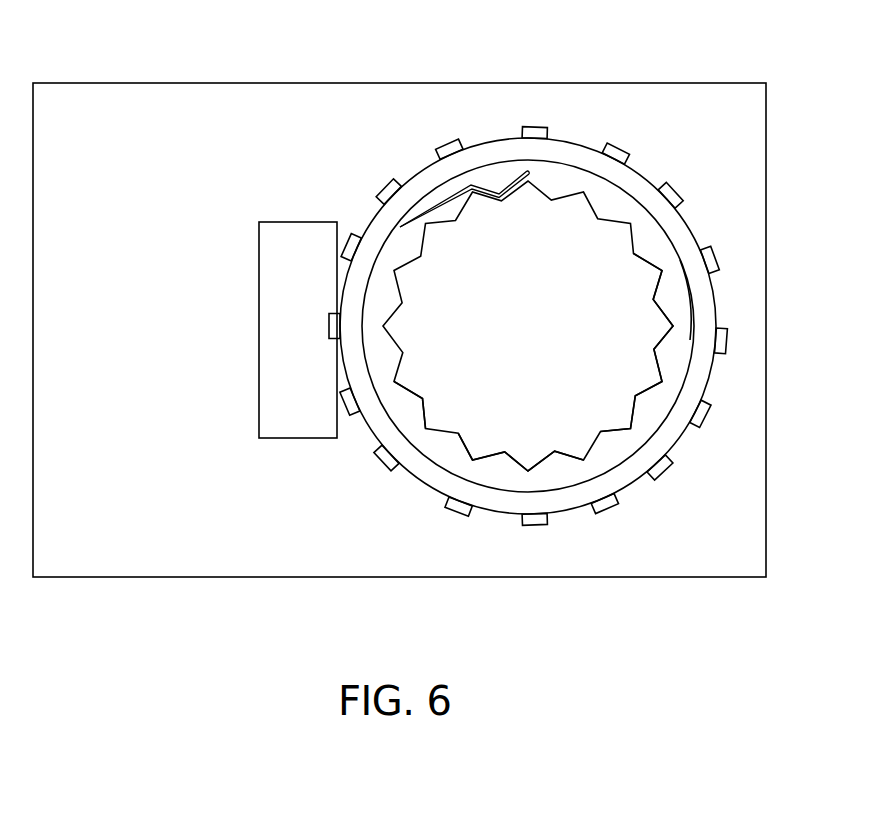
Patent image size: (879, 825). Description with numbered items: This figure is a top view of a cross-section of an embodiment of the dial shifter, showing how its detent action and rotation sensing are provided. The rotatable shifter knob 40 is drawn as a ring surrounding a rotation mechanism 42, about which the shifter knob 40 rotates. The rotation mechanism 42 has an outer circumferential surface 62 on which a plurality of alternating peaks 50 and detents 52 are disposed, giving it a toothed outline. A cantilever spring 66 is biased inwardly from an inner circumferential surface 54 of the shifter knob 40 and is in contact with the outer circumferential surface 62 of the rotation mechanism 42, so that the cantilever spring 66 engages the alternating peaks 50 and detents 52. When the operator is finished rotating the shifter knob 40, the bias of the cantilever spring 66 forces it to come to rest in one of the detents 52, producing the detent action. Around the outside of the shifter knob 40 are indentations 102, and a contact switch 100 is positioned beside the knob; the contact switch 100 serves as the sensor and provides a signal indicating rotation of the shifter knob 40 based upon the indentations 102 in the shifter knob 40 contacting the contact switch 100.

The contact switch 100 is at (298, 248).
The indentations 102 is at (448, 142).
The shifter knob 40 is at (643, 188).
The rotation mechanism 42 is at (487, 355).
The peaks 50 is at (640, 434).
The detents 52 is at (456, 434).
The inner circumferential surface 54 is at (684, 288).
The outer circumferential surface 62 is at (419, 404).
The cantilever spring 66 is at (494, 187).